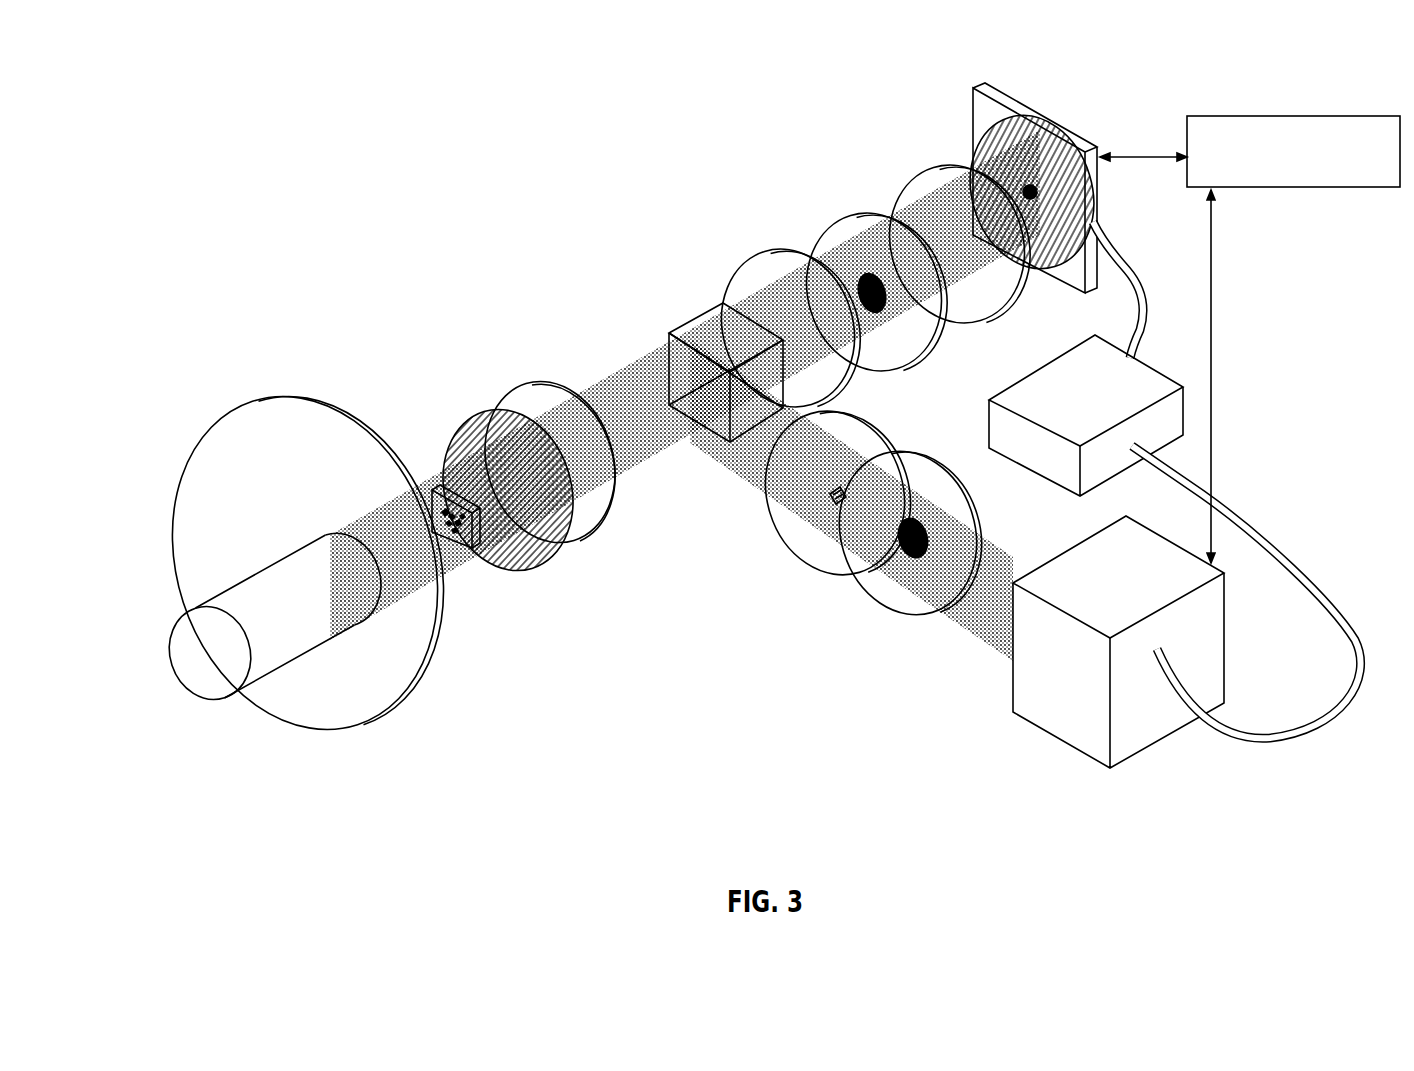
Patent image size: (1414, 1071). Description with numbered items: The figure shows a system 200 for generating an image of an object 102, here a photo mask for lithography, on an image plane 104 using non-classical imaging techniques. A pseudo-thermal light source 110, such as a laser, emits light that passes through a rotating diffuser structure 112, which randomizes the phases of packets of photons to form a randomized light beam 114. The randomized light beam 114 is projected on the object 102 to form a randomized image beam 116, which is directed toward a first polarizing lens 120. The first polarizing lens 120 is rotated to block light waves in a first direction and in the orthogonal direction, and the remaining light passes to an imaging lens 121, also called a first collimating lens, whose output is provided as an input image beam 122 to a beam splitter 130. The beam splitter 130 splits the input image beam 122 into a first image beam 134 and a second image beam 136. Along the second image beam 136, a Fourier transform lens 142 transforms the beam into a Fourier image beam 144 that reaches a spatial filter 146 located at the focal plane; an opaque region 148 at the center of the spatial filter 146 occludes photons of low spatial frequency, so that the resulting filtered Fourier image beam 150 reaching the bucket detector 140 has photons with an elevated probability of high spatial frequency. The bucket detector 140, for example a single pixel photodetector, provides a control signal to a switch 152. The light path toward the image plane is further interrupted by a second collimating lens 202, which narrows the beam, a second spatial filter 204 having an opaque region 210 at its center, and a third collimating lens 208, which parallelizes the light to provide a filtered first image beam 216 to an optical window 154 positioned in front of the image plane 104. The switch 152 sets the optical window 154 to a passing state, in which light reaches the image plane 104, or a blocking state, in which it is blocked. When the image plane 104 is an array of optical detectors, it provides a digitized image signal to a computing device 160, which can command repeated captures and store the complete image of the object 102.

The system 200 is at (448, 158).
The pseudo-thermal light source 110 is at (198, 627).
The rotating diffuser structure 112 is at (225, 405).
The randomized light beam 114 is at (438, 570).
The randomized image beam 116 is at (440, 472).
The object 102 is at (468, 563).
The first polarizing lens 120 is at (477, 407).
The imaging lens 121 is at (555, 393).
The input image beam 122 is at (633, 377).
The beam splitter 130 is at (687, 330).
The first image beam 134 is at (753, 313).
The second image beam 136 is at (768, 456).
The Fourier transform lens 142 is at (777, 540).
The Fourier image beam 144 is at (898, 505).
The spatial filter 146 is at (850, 582).
The opaque region 148 is at (907, 552).
The filtered Fourier image beam 150 is at (985, 615).
The bucket detector 140 is at (1078, 708).
The switch 152 is at (1078, 347).
The second collimating lens 202 is at (758, 250).
The second spatial filter 204 is at (838, 215).
The third collimating lens 208 is at (907, 183).
The opaque region 210 is at (880, 315).
The image plane 104 is at (978, 90).
The optical window 154 is at (973, 150).
The filtered first image beam 216 is at (972, 172).
The computing device 160 is at (1370, 178).